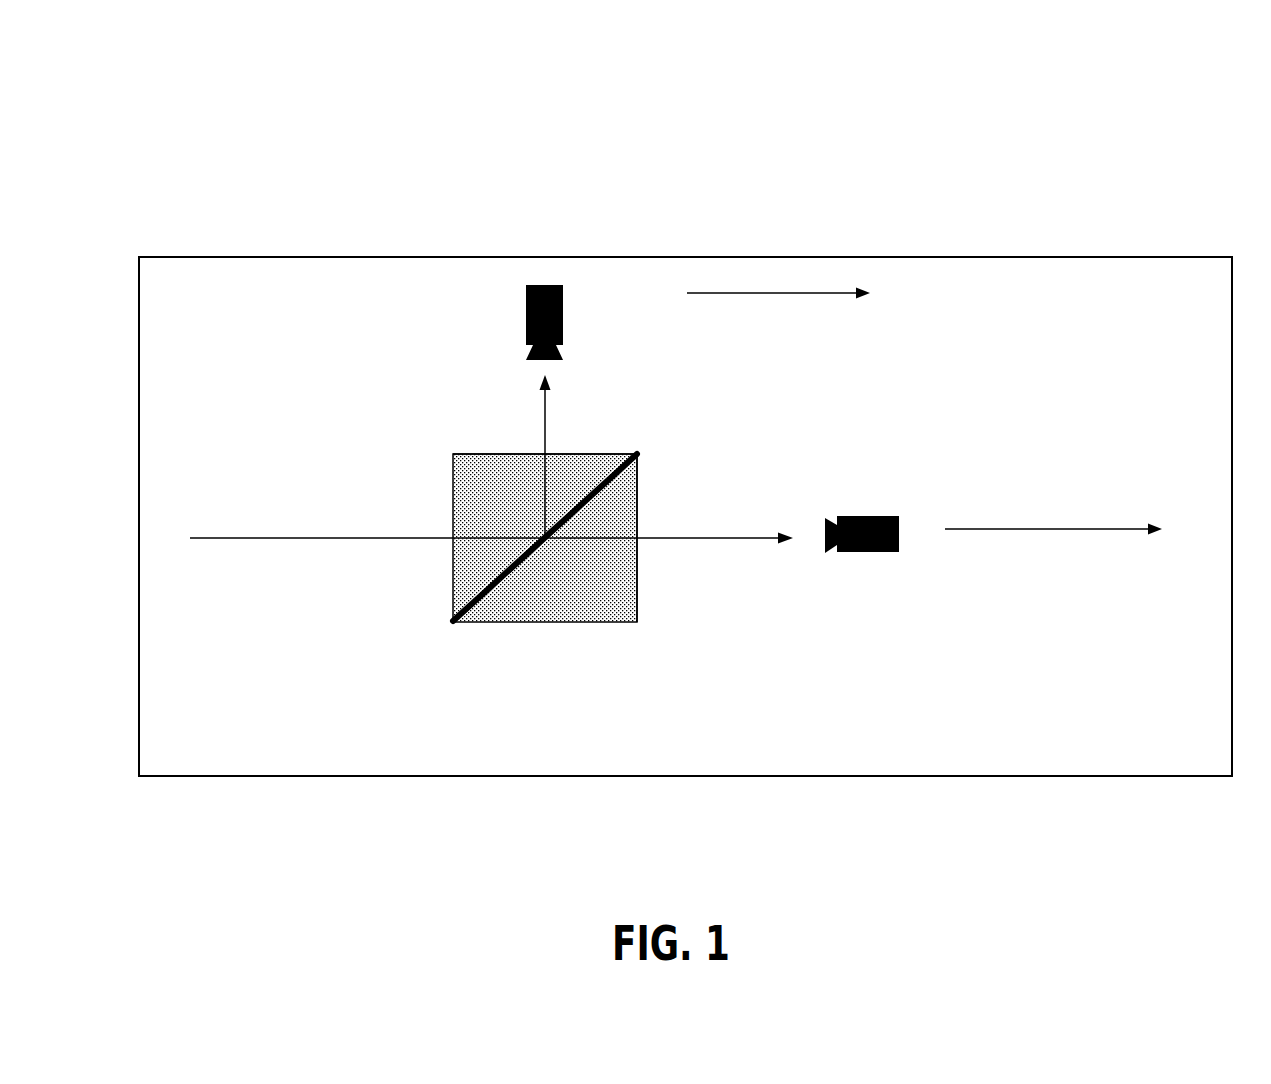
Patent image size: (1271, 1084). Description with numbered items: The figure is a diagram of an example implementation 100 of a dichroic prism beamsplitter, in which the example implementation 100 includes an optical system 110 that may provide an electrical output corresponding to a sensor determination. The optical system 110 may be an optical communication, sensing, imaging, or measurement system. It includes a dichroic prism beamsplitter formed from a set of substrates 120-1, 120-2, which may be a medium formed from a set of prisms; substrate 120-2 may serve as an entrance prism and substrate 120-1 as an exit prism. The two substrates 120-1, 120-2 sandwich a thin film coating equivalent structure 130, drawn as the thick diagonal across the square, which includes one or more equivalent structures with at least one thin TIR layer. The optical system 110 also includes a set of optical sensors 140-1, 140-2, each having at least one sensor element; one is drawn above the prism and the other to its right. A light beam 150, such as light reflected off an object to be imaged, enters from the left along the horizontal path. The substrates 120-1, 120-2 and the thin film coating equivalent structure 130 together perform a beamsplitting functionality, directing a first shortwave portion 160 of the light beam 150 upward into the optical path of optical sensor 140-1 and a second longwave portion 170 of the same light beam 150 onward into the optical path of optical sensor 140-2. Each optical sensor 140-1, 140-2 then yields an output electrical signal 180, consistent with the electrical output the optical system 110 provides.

The example implementation 100 is at (163, 61).
The optical system 110 is at (696, 257).
The substrate 120-1 is at (593, 623).
The substrate 120-2 is at (604, 452).
The thin film coating equivalent structure 130 is at (451, 625).
The optical sensor 140-1 is at (564, 297).
The optical sensor 140-2 is at (862, 515).
The light beam 150 is at (319, 566).
The shortwave portion 160 is at (348, 359).
The longwave portion 170 is at (716, 564).
The output electrical signal 180 is at (798, 326).